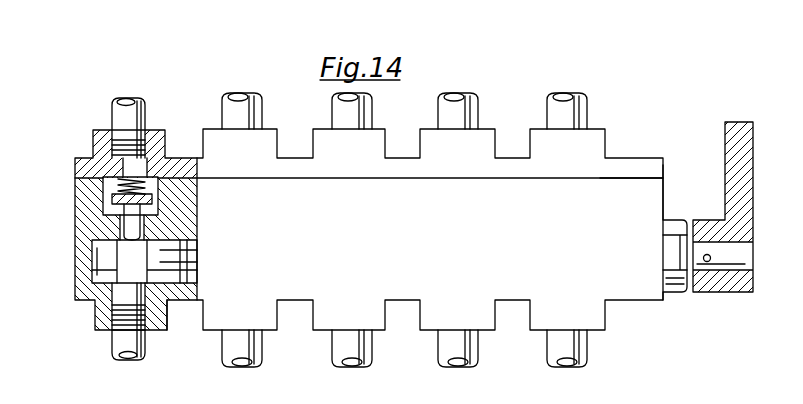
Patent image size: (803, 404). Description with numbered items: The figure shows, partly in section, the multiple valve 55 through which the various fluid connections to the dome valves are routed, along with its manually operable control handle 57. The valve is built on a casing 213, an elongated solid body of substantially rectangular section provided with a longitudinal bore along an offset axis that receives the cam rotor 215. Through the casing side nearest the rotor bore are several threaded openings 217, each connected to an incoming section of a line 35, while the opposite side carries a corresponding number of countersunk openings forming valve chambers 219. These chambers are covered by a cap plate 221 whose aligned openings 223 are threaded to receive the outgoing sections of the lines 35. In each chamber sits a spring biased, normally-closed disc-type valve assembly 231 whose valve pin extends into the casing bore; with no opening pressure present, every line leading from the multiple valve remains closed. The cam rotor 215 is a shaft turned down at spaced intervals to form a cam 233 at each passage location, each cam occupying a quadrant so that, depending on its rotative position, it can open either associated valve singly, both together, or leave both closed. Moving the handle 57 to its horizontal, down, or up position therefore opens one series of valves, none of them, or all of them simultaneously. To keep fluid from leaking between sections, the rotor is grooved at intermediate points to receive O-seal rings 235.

The line 35 is at (123, 112).
The multiple valve 55 is at (358, 211).
The control handle 57 is at (725, 158).
The casing 213 is at (605, 190).
The cam rotor 215 is at (167, 302).
The threaded openings 217 is at (127, 292).
The valve chambers 219 is at (108, 202).
The cap plate 221 is at (178, 158).
The aligned openings 223 is at (118, 142).
The disc-type valve assembly 231 is at (152, 200).
The cam 233 is at (132, 254).
The O-seal rings 235 is at (192, 240).